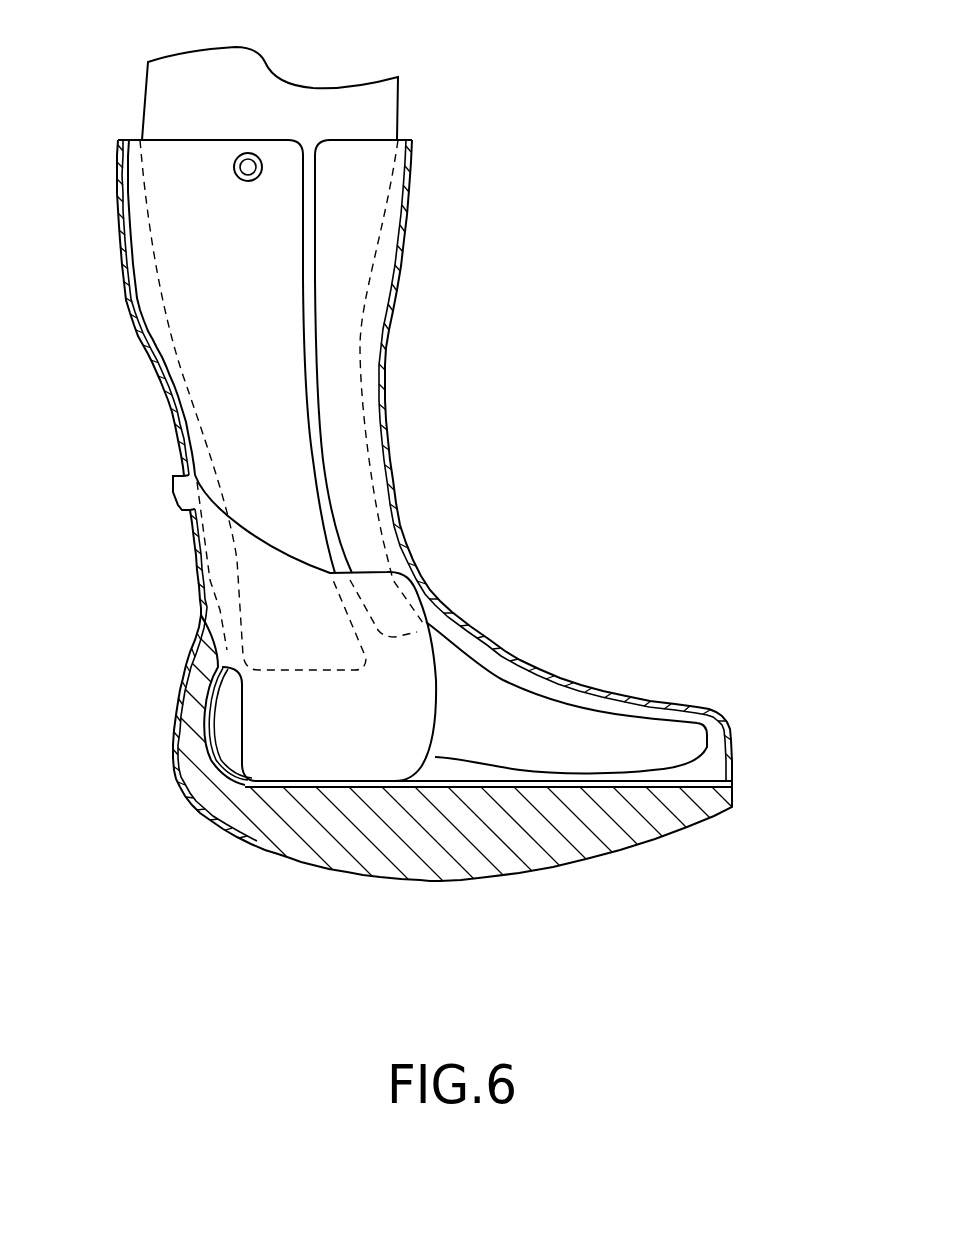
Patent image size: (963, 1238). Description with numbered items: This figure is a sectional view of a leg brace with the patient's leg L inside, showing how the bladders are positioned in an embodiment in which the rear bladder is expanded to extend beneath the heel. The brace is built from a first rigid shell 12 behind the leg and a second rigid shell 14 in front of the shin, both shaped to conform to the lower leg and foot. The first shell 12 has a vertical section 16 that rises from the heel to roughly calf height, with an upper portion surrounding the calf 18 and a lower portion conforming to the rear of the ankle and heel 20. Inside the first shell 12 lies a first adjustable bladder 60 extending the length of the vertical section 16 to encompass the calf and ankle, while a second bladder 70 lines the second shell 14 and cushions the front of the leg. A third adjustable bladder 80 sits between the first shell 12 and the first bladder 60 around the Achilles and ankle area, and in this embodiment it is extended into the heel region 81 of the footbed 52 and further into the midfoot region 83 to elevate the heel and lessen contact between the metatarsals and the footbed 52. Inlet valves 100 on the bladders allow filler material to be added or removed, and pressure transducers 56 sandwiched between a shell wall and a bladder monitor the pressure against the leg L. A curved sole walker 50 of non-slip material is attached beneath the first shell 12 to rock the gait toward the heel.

The leg L is at (347, 88).
The first rigid shell 12 is at (131, 344).
The second rigid shell 14 is at (426, 192).
The vertical section 16 is at (167, 390).
The calf 18 is at (123, 282).
The ankle and heel 20 is at (203, 610).
The sole walker 50 is at (600, 850).
The footbed 52 is at (733, 779).
The pressure transducers 56 is at (175, 418).
The first adjustable bladder 60 is at (153, 200).
The second bladder 70 is at (358, 253).
The third adjustable bladder 80 is at (262, 723).
The heel region 81 is at (383, 788).
The midfoot region 83 is at (503, 788).
The inlet valve 100 is at (248, 182).